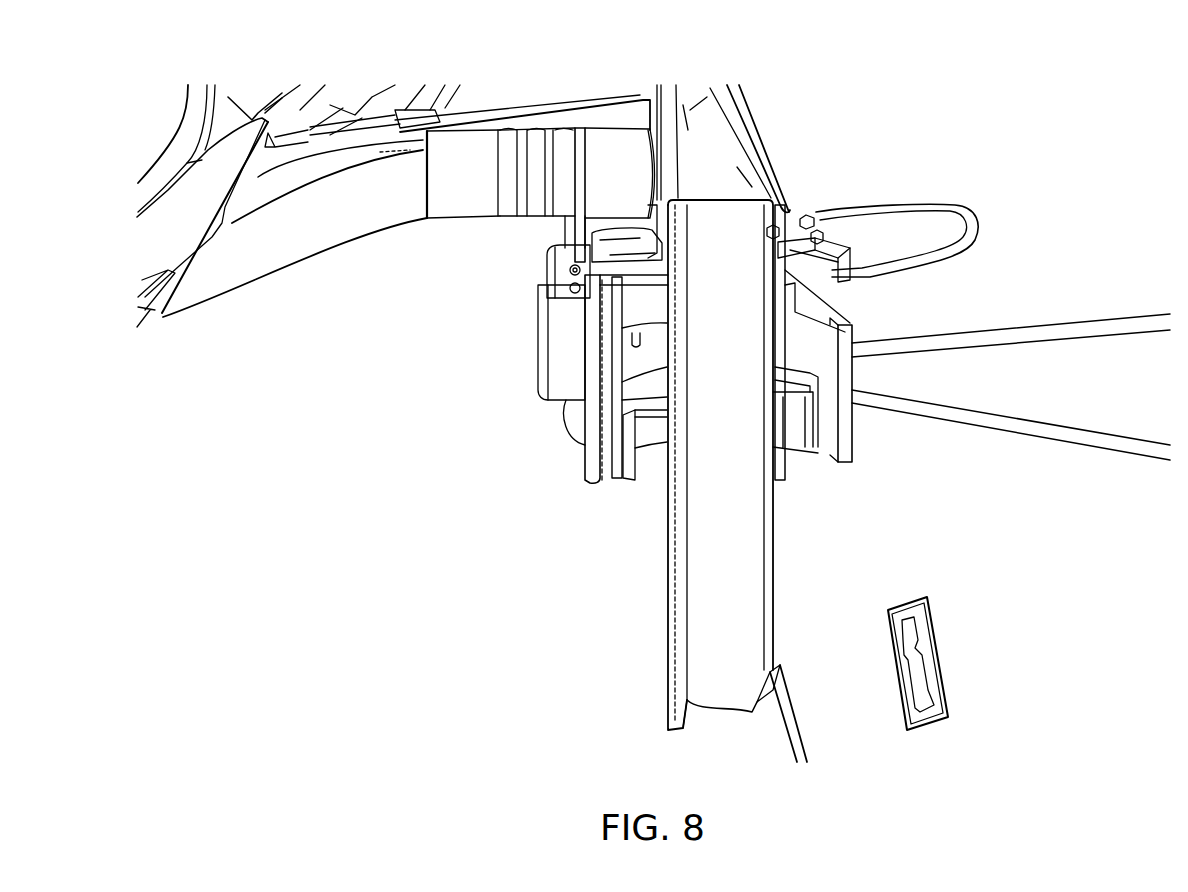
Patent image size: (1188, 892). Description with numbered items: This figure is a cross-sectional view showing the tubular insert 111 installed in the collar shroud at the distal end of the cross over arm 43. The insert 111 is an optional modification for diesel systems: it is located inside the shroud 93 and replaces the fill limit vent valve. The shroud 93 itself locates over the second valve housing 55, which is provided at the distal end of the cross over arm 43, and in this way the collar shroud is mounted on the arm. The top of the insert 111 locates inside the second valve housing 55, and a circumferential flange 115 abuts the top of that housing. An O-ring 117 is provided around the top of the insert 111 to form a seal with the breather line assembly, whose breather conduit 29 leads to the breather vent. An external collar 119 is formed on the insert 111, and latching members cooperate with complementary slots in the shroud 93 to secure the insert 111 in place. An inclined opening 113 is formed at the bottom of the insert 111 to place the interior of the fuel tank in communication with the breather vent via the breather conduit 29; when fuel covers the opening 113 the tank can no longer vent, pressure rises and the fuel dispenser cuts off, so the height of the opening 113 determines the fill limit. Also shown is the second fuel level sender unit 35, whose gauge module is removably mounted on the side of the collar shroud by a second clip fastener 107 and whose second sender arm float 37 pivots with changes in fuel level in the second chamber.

The breather conduit 29 is at (377, 215).
The second fuel level sender unit 35 is at (547, 267).
The second sender arm float 37 is at (1050, 430).
The cross over arm 43 is at (203, 388).
The second valve housing 55 is at (797, 162).
The shroud 93 is at (856, 435).
The second clip fastener 107 is at (546, 380).
The tubular insert 111 is at (622, 610).
The inclined opening 113 is at (765, 690).
The circumferential flange 115 is at (797, 258).
The O-ring 117 is at (800, 222).
The external collar 119 is at (818, 453).